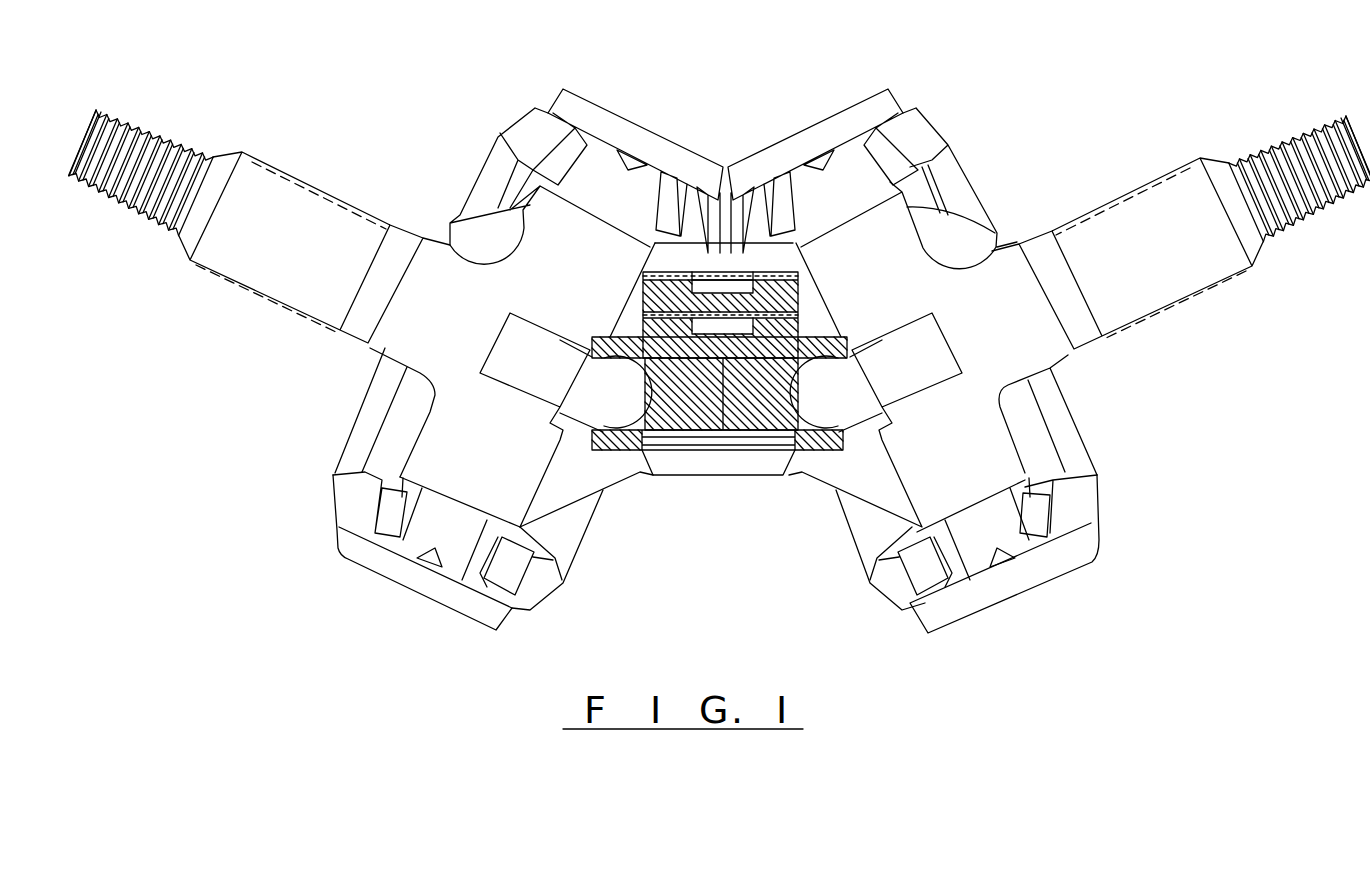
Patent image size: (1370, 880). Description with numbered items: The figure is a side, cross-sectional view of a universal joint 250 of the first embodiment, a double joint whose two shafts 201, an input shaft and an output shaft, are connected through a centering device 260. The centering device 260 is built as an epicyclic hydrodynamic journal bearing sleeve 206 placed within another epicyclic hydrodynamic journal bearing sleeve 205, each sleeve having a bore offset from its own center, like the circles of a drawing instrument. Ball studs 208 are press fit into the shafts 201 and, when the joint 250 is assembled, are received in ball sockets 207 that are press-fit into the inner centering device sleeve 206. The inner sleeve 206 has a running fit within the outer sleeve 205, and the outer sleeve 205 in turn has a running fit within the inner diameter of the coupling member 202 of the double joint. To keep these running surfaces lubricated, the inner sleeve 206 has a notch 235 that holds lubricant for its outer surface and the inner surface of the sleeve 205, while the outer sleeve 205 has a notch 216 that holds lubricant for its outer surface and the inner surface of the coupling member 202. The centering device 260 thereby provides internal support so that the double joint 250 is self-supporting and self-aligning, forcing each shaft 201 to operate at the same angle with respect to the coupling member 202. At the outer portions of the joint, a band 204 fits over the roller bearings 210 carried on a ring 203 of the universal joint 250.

The universal joint 250 is at (719, 326).
The shaft 201 is at (270, 283).
The coupling member 202 is at (733, 477).
The ring 203 is at (1080, 497).
The band 204 is at (1053, 583).
The centering device sleeve 205 is at (643, 277).
The centering device sleeve 206 is at (777, 338).
The ball socket 207 is at (685, 440).
The ball stud 208 is at (517, 345).
The roller bearing 210 is at (387, 513).
The notch 216 is at (725, 282).
The notch 235 is at (727, 328).
The centering device 260 is at (727, 280).